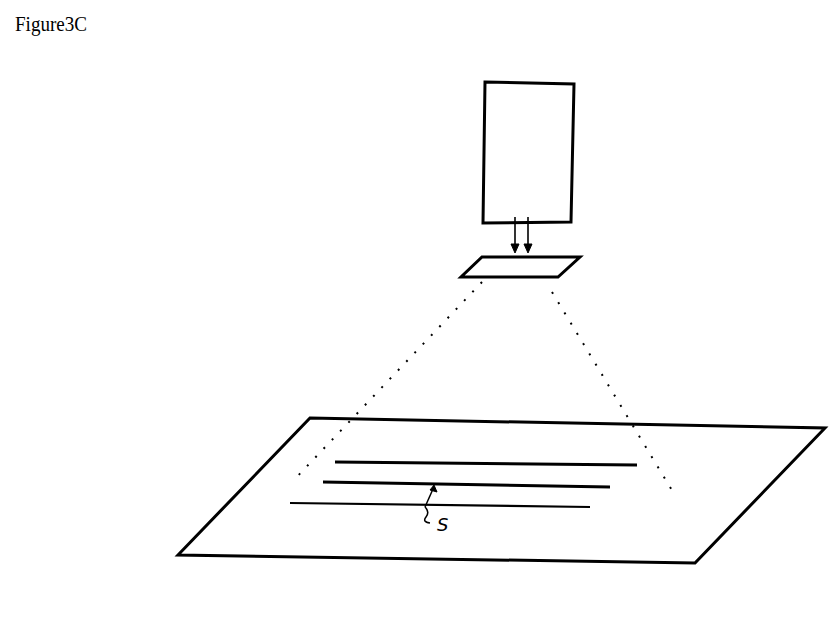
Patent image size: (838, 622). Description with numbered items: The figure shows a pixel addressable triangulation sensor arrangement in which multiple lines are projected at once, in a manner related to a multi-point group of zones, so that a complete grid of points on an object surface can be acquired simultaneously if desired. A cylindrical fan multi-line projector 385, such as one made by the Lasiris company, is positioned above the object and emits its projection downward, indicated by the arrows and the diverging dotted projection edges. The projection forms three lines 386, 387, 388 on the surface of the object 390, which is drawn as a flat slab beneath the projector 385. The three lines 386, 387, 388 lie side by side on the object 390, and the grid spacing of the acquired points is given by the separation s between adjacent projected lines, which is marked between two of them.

The cylindrical fan multi-line projector 385 is at (605, 267).
The projected line 386 is at (535, 462).
The projected line 387 is at (595, 485).
The projected line 388 is at (603, 499).
The object 390 is at (560, 562).